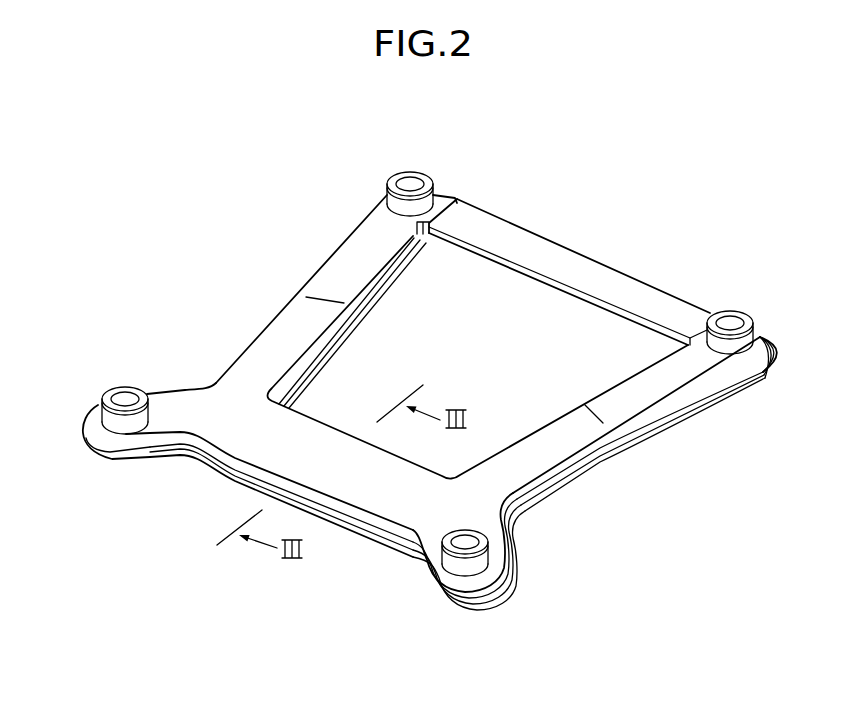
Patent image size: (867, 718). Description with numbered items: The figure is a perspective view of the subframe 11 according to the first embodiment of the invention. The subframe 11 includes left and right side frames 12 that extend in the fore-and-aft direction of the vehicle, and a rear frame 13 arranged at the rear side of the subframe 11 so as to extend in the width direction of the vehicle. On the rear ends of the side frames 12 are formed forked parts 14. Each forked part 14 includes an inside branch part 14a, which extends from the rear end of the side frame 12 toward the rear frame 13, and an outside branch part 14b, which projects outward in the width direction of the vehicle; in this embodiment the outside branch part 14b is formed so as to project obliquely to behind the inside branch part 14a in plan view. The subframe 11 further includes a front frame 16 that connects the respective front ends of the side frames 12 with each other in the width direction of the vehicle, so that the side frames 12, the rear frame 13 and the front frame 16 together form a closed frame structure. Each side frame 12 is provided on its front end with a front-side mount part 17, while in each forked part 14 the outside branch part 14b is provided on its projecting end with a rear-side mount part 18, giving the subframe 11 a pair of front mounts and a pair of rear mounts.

The subframe 11 is at (270, 278).
The side frame 12 is at (267, 327).
The rear frame 13 is at (303, 470).
The forked part 14 is at (220, 409).
The inside branch part 14a is at (247, 427).
The outside branch part 14b is at (143, 434).
The front frame 16 is at (577, 270).
The front-side mount part 17 is at (425, 172).
The rear-side mount part 18 is at (113, 389).